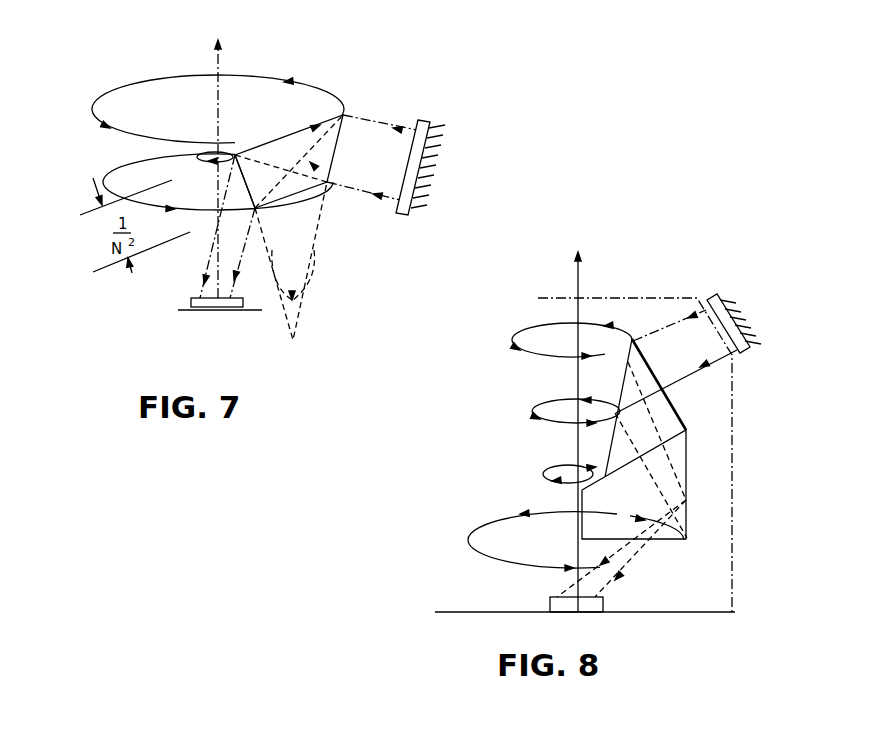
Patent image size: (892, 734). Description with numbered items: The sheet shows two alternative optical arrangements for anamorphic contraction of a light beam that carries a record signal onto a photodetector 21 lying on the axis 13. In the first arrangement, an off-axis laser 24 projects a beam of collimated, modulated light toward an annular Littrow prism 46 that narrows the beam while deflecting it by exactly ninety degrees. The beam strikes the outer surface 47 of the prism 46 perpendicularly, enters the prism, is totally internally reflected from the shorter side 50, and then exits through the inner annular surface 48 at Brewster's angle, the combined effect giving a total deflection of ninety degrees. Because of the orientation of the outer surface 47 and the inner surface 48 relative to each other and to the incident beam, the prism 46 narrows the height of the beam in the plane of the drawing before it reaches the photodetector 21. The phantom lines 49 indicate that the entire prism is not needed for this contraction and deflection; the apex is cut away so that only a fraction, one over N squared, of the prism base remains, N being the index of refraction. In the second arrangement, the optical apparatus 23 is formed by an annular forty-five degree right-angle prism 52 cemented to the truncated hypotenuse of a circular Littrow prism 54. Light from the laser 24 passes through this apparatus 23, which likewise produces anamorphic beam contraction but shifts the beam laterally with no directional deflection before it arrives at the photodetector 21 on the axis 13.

In FIG. 7, the axis 13 is at (213, 68).
In FIG. 8, the axis 13 is at (579, 287).
In FIG. 7, the laser 24 is at (426, 121).
In FIG. 8, the laser 24 is at (713, 297).
In FIG. 7, the shorter side 50 is at (303, 128).
In FIG. 7, the annular Littrow prism 46 is at (342, 128).
In FIG. 7, the outer surface 47 is at (340, 153).
In FIG. 7, the inner annular surface 48 is at (244, 178).
In FIG. 7, the photodetector 21 is at (193, 298).
In FIG. 8, the photodetector 21 is at (555, 603).
In FIG. 7, the phantom lines 49 is at (291, 273).
In FIG. 8, the 45° right-angle prism 52 is at (678, 407).
In FIG. 8, the circular Littrow prism 54 is at (680, 490).
In FIG. 8, the optical apparatus 23 is at (735, 487).